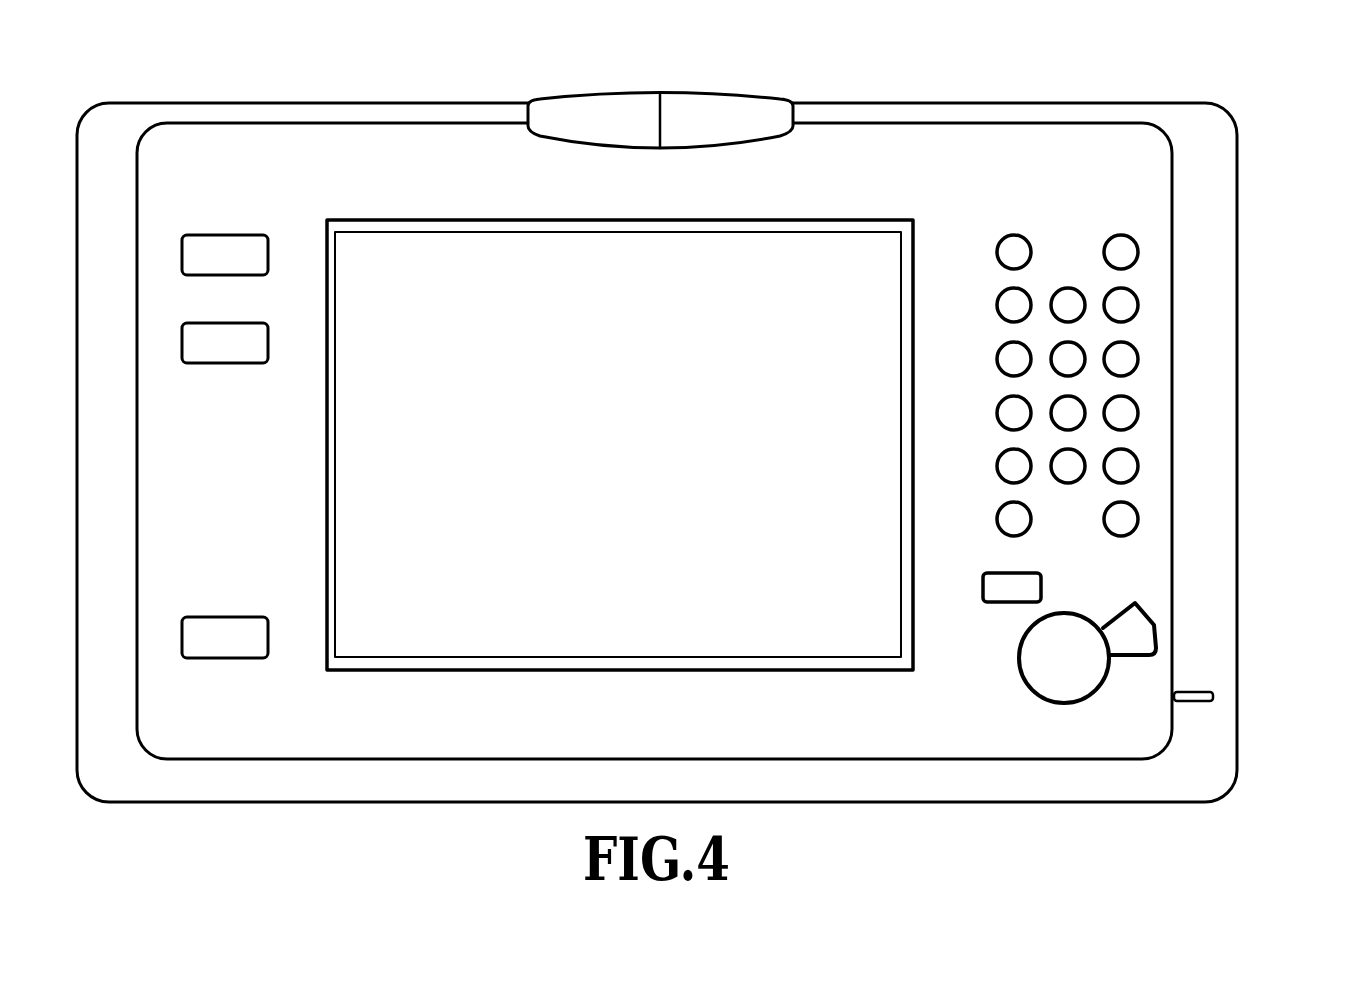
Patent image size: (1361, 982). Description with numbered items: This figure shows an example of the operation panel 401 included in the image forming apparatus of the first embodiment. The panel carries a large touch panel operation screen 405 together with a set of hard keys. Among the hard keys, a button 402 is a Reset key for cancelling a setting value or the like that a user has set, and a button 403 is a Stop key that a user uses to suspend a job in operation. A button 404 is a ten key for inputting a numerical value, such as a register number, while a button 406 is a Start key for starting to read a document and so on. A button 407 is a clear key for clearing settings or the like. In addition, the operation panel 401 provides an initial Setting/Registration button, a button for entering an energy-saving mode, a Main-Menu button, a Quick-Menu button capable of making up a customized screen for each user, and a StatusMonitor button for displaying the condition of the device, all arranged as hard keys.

The operation panel 401 is at (1123, 104).
The Reset key 402 is at (1028, 587).
The Stop key 403 is at (1138, 628).
The ten key 404 is at (1138, 352).
The operation screen 405 is at (390, 263).
The Start key 406 is at (1064, 685).
The clear key 407 is at (1138, 518).